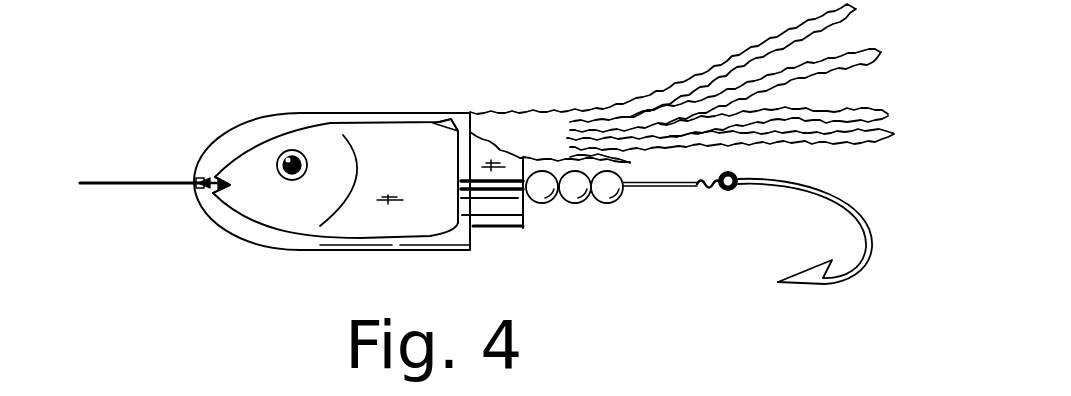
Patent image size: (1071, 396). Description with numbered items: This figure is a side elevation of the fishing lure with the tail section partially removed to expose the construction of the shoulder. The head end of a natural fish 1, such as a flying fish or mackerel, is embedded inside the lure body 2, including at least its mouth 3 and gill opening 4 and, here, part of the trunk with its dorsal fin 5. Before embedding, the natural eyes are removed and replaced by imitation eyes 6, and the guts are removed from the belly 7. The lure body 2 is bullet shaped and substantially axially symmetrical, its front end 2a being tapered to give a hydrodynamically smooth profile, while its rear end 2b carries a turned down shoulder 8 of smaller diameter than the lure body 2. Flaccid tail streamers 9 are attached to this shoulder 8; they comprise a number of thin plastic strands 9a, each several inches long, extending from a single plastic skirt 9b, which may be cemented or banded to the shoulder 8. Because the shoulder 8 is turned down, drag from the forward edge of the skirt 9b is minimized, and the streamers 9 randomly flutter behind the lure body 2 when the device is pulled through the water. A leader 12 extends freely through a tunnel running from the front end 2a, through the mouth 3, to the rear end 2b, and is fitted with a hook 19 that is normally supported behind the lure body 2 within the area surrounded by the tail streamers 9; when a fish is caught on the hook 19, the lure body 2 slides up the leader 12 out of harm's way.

The natural fish 1 is at (252, 163).
The lure body 2 is at (341, 103).
The front end of the lure body 2a is at (223, 150).
The rear end of the lure body 2b is at (523, 217).
The mouth 3 is at (216, 194).
The gill opening 4 is at (340, 221).
The dorsal fin 5 is at (447, 121).
The imitation eyes 6 is at (292, 149).
The belly 7 is at (413, 213).
The turned down shoulder 8 is at (497, 228).
The tail streamers 9 is at (553, 107).
The plastic strands 9a is at (763, 88).
The skirt 9b is at (488, 131).
The leader 12 is at (101, 186).
The hook 19 is at (827, 281).